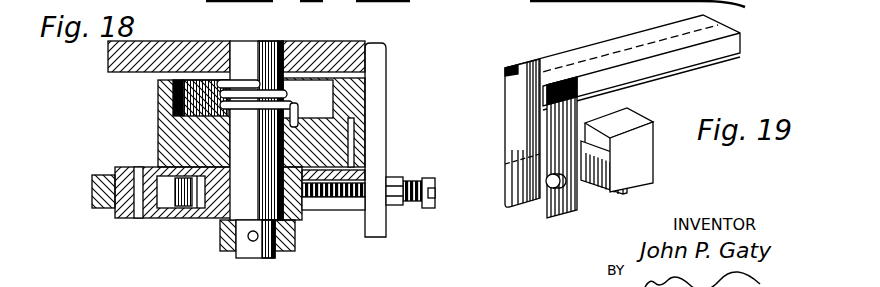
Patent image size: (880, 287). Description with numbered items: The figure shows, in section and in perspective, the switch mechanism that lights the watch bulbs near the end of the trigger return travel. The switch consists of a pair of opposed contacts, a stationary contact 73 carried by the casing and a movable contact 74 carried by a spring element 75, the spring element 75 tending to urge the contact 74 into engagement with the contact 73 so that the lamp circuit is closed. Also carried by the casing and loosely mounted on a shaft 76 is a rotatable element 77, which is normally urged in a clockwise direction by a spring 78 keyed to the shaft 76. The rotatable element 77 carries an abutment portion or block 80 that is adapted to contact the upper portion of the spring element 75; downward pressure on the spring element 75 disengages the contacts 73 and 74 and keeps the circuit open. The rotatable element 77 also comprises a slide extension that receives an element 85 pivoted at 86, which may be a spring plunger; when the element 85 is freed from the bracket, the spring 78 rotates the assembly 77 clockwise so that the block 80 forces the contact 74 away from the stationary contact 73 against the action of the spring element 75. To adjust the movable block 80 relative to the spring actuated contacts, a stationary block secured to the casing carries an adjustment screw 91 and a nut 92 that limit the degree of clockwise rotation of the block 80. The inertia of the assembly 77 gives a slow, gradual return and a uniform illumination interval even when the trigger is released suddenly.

In FIG. 19, the stationary contact 73 is at (567, 188).
In FIG. 19, the movable contact 74 is at (553, 194).
In FIG. 19, the spring element 75 is at (504, 130).
In FIG. 18, the shaft 76 is at (237, 140).
In FIG. 18, the rotatable element 77 is at (158, 120).
In FIG. 18, the spring 78 is at (298, 110).
In FIG. 18, the abutment portion 80 is at (297, 220).
In FIG. 19, the abutment portion 80 is at (627, 118).
In FIG. 18, the pivoted element 85 is at (97, 198).
In FIG. 18, the pivot 86 is at (138, 218).
In FIG. 18, the adjustment screw 91 is at (403, 177).
In FIG. 18, the nut 92 is at (403, 208).